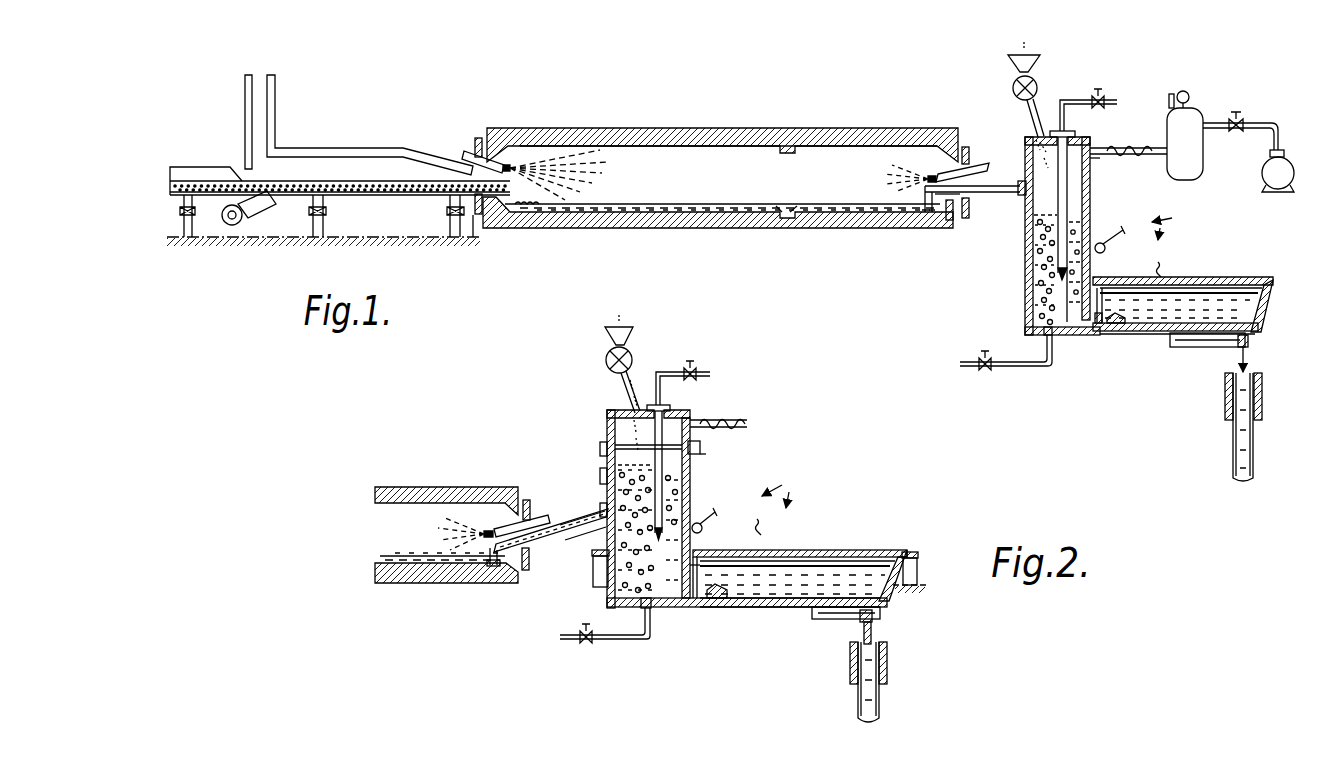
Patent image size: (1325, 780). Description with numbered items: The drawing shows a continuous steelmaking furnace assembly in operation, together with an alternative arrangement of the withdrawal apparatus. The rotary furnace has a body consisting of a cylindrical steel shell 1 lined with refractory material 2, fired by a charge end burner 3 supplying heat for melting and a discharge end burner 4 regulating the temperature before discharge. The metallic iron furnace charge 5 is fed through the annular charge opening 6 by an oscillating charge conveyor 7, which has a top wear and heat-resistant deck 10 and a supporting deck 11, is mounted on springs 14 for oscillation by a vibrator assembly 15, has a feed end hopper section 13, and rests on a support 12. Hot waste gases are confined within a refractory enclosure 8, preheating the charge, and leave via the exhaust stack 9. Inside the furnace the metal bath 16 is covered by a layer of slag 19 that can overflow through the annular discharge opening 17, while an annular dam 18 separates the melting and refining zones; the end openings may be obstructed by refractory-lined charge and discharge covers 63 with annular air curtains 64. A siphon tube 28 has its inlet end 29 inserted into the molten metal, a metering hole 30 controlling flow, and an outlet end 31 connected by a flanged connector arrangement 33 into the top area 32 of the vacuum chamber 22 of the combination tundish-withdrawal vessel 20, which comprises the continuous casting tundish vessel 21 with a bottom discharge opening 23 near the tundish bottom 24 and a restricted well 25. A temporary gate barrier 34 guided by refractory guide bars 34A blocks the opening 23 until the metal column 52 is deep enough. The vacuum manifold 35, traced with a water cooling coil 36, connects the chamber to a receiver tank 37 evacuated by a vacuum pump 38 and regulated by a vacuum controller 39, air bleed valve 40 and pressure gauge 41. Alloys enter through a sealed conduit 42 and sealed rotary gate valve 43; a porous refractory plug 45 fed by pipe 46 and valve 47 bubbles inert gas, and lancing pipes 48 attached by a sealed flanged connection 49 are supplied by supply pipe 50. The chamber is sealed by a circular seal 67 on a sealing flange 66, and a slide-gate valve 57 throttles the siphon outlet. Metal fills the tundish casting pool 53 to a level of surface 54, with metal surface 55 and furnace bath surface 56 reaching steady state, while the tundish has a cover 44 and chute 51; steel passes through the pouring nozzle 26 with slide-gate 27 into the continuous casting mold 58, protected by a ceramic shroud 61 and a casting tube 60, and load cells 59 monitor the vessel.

In FIG. 1, the cylindrical steel shell 1 is at (629, 128).
In FIG. 1, the refractory material 2 is at (612, 145).
In FIG. 1, the charge end burner 3 is at (509, 167).
In FIG. 1, the discharge end burner 4 is at (940, 173).
In FIG. 2, the discharge end burner 4 is at (496, 528).
In FIG. 1, the metallic iron furnace charge 5 is at (527, 197).
In FIG. 1, the annular charge opening 6 is at (492, 207).
In FIG. 1, the oscillating charge conveyor 7 is at (310, 182).
In FIG. 1, the refractory enclosure 8 is at (326, 150).
In FIG. 1, the exhaust stack 9 is at (246, 96).
In FIG. 1, the top wear and heat-resistant deck 10 is at (343, 196).
In FIG. 1, the supporting deck 11 is at (396, 196).
In FIG. 1, the support post 12 is at (474, 226).
In FIG. 1, the feed end hopper section 13 is at (203, 167).
In FIG. 1, the springs 14 is at (310, 213).
In FIG. 1, the vibrator assembly 15 is at (246, 216).
In FIG. 1, the metal bath 16 is at (796, 205).
In FIG. 2, the metal bath 16 is at (405, 557).
In FIG. 1, the annular discharge opening 17 is at (960, 225).
In FIG. 1, the annular dam 18 is at (779, 205).
In FIG. 1, the layer of slag 19 is at (698, 204).
In FIG. 2, the layer of slag 19 is at (378, 548).
In FIG. 1, the combination tundish-withdrawal vessel 20 is at (1172, 219).
In FIG. 2, the combination tundish-withdrawal vessel 20 is at (785, 484).
In FIG. 1, the continuous casting tundish vessel 21 is at (1163, 334).
In FIG. 2, the continuous casting tundish vessel 21 is at (800, 608).
In FIG. 1, the vacuum chamber 22 is at (1025, 290).
In FIG. 2, the vacuum chamber 22 is at (690, 494).
In FIG. 1, the bottom discharge opening 23 is at (1098, 322).
In FIG. 2, the bottom discharge opening 23 is at (693, 600).
In FIG. 1, the tundish bottom 24 is at (1152, 333).
In FIG. 2, the tundish bottom 24 is at (762, 607).
In FIG. 1, the restricted well 25 is at (1113, 323).
In FIG. 2, the restricted well 25 is at (715, 600).
In FIG. 1, the steel pouring nozzle 26 is at (1247, 336).
In FIG. 2, the steel pouring nozzle 26 is at (882, 613).
In FIG. 1, the slide-gate 27 is at (1248, 346).
In FIG. 2, the slide-gate 27 is at (860, 620).
In FIG. 1, the siphon tube 28 is at (1002, 193).
In FIG. 2, the siphon tube 28 is at (588, 520).
In FIG. 1, the inlet end 29 is at (924, 207).
In FIG. 2, the inlet end 29 is at (493, 566).
In FIG. 1, the metering hole 30 is at (940, 196).
In FIG. 2, the metering hole 30 is at (548, 528).
In FIG. 1, the outlet end 31 is at (1092, 156).
In FIG. 2, the outlet end 31 is at (606, 526).
In FIG. 1, the top area 32 is at (1027, 140).
In FIG. 2, the top area 32 is at (612, 432).
In FIG. 1, the flanged connector arrangement 33 is at (1020, 181).
In FIG. 1, the temporary gate barrier 34 is at (1102, 253).
In FIG. 2, the temporary gate barrier 34 is at (699, 570).
In FIG. 1, the refractory guide bars 34A is at (1099, 324).
In FIG. 2, the refractory guide bars 34A is at (697, 600).
In FIG. 1, the vacuum manifold 35 is at (1097, 148).
In FIG. 2, the vacuum manifold 35 is at (705, 420).
In FIG. 1, the water cooling coil 36 is at (1130, 148).
In FIG. 2, the water cooling coil 36 is at (735, 422).
In FIG. 1, the receiver tank 37 is at (1194, 170).
In FIG. 1, the vacuum pump 38 is at (1262, 178).
In FIG. 1, the vacuum controller 39 is at (1240, 118).
In FIG. 1, the air bleed valve 40 is at (1171, 94).
In FIG. 1, the pressure gauge 41 is at (1186, 91).
In FIG. 1, the sealed conduit 42 is at (1030, 112).
In FIG. 2, the sealed conduit 42 is at (625, 396).
In FIG. 1, the sealed rotary gate valve 43 is at (1040, 80).
In FIG. 2, the sealed rotary gate valve 43 is at (632, 350).
In FIG. 1, the cover 44 is at (1211, 277).
In FIG. 2, the cover 44 is at (812, 550).
In FIG. 1, the porous refractory plug 45 is at (1044, 344).
In FIG. 2, the porous refractory plug 45 is at (648, 636).
In FIG. 2, the pipe 46 is at (628, 640).
In FIG. 1, the valve 47 is at (982, 368).
In FIG. 2, the valve 47 is at (582, 643).
In FIG. 1, the lancing pipes 48 is at (1068, 176).
In FIG. 2, the lancing pipes 48 is at (663, 434).
In FIG. 1, the sealed flanged connection 49 is at (1065, 131).
In FIG. 2, the sealed flanged connection 49 is at (670, 406).
In FIG. 1, the supply pipe 50 is at (1060, 112).
In FIG. 2, the supply pipe 50 is at (672, 386).
In FIG. 1, the conduit or chute 51 is at (1157, 272).
In FIG. 2, the conduit or chute 51 is at (752, 545).
In FIG. 1, the metal column 52 is at (1078, 228).
In FIG. 2, the metal column 52 is at (674, 512).
In FIG. 1, the tundish casting pool 53 is at (1178, 293).
In FIG. 2, the tundish casting pool 53 is at (779, 566).
In FIG. 1, the level of surface 54 is at (1235, 290).
In FIG. 2, the level of surface 54 is at (856, 561).
In FIG. 1, the metal surface 55 is at (1072, 213).
In FIG. 1, the furnace bath surface 56 is at (831, 205).
In FIG. 2, the furnace bath surface 56 is at (432, 556).
In FIG. 2, the slide-gate valve 57 is at (602, 503).
In FIG. 1, the continuous casting mold 58 is at (1225, 399).
In FIG. 2, the continuous casting mold 58 is at (887, 666).
In FIG. 2, the load cells 59 is at (593, 562).
In FIG. 1, the casting tube 60 is at (1254, 452).
In FIG. 2, the casting tube 60 is at (880, 712).
In FIG. 2, the ceramic shroud 61 is at (872, 636).
In FIG. 1, the charge and discharge covers 63 is at (470, 157).
In FIG. 2, the charge and discharge covers 63 is at (538, 508).
In FIG. 1, the annular air curtains 64 is at (480, 138).
In FIG. 2, the annular air curtains 64 is at (526, 500).
In FIG. 2, the sealing flange 66 is at (706, 455).
In FIG. 2, the circular seal 67 is at (700, 449).